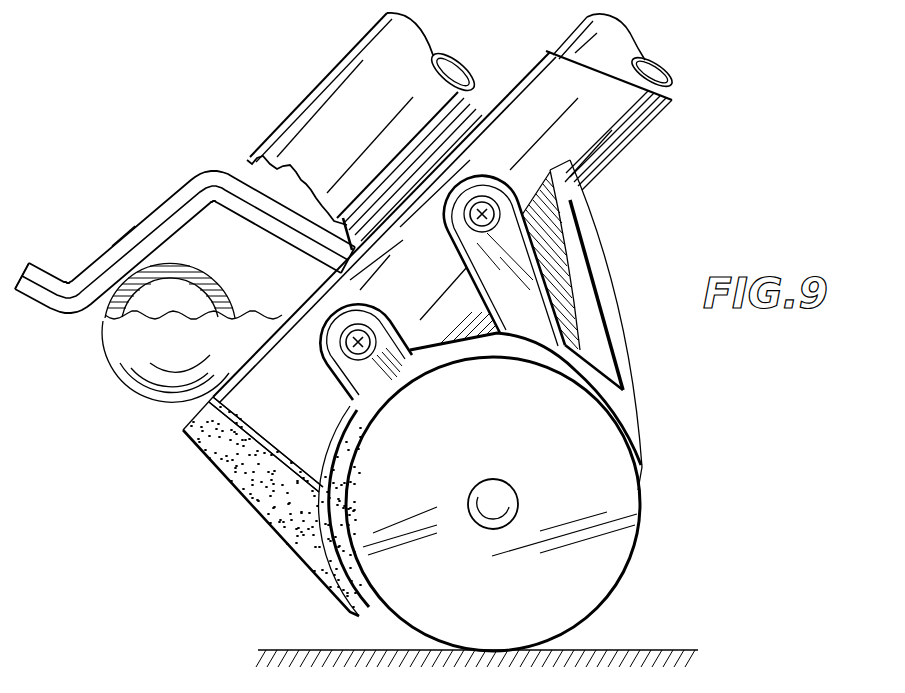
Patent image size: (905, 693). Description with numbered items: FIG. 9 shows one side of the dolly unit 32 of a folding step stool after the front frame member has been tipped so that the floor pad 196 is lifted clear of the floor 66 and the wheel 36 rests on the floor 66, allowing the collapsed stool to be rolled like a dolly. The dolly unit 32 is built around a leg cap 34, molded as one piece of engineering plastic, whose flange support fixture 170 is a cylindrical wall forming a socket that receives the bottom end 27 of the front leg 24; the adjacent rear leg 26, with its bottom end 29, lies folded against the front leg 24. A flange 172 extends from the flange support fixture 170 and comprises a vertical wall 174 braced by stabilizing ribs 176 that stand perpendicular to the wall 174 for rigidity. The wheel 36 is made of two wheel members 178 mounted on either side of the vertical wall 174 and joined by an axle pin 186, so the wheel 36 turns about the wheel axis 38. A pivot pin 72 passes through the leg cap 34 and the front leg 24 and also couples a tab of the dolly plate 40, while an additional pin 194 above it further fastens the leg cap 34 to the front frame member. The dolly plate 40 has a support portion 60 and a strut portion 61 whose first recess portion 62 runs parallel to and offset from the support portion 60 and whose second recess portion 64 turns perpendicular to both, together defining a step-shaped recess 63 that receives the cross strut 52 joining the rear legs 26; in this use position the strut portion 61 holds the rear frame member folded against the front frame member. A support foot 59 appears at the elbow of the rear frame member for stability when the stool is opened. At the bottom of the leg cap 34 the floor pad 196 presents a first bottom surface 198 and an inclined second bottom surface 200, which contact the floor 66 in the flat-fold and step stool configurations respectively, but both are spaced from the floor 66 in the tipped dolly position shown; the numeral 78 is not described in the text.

The front leg 24 is at (672, 96).
The rear leg 26 is at (288, 104).
The bottom end of front leg 27 is at (613, 50).
The bottom end of rear leg 29 is at (277, 141).
The dolly unit 32 is at (562, 504).
The leg cap 34 is at (468, 253).
The wheel 36 is at (641, 563).
The wheel axis 38 is at (480, 513).
The dolly plate 40 is at (57, 268).
The cross strut 52 is at (217, 282).
The support foot 59 is at (157, 386).
The support portion 60 is at (47, 307).
The strut portion 61 is at (145, 222).
The first recess portion 62 is at (185, 255).
The recess 63 is at (212, 222).
The second recess portion 64 is at (300, 230).
The floor 66 is at (680, 650).
The pivot pin 72 is at (352, 348).
The strap leg 78 is at (120, 252).
The flange support fixture 170 is at (622, 142).
The flange 172 is at (666, 408).
The vertical wall 174 is at (610, 323).
The stabilizing ribs 176 is at (540, 272).
The wheel member 178 is at (600, 587).
The axle pin 186 is at (477, 493).
The additional pin 194 is at (487, 198).
The floor pad 196 is at (246, 506).
The first bottom surface 198 is at (297, 563).
The second bottom surface 200 is at (220, 470).